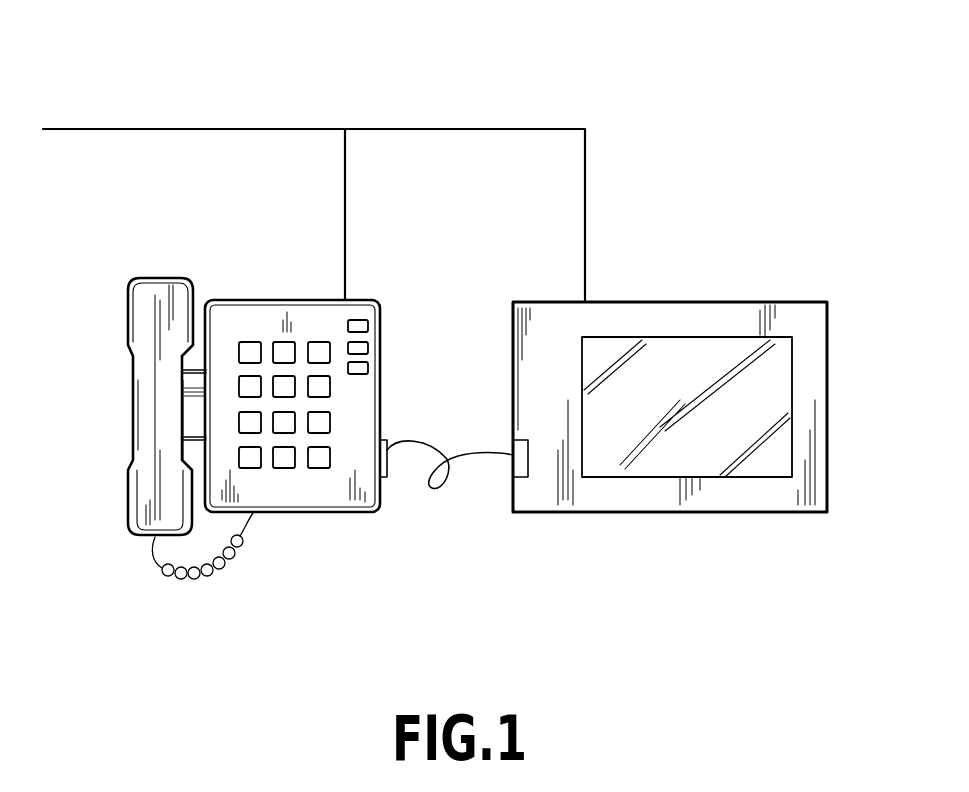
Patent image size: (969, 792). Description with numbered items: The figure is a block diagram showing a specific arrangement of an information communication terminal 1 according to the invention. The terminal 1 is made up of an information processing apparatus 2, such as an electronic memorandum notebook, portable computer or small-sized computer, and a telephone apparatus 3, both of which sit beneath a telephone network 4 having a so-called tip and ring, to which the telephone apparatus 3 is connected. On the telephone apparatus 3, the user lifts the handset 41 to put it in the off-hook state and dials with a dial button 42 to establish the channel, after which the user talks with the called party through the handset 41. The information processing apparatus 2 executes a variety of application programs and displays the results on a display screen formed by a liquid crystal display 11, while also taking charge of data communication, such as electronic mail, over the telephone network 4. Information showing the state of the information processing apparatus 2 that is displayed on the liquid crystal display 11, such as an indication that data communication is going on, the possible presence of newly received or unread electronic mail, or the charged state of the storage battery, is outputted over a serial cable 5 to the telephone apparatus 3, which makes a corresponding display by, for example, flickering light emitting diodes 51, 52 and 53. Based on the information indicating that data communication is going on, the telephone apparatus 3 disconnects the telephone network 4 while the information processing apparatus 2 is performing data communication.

The information communication terminal 1 is at (538, 84).
The information processing apparatus 2 is at (660, 513).
The telephone apparatus 3 is at (288, 513).
The telephone network 4 is at (83, 128).
The serial cable 5 is at (480, 459).
The liquid crystal display 11 is at (778, 410).
The handset 41 is at (157, 292).
The dial button 42 is at (290, 308).
The light emitting diode 51 is at (361, 320).
The light emitting diode 52 is at (370, 346).
The light emitting diode 53 is at (370, 367).